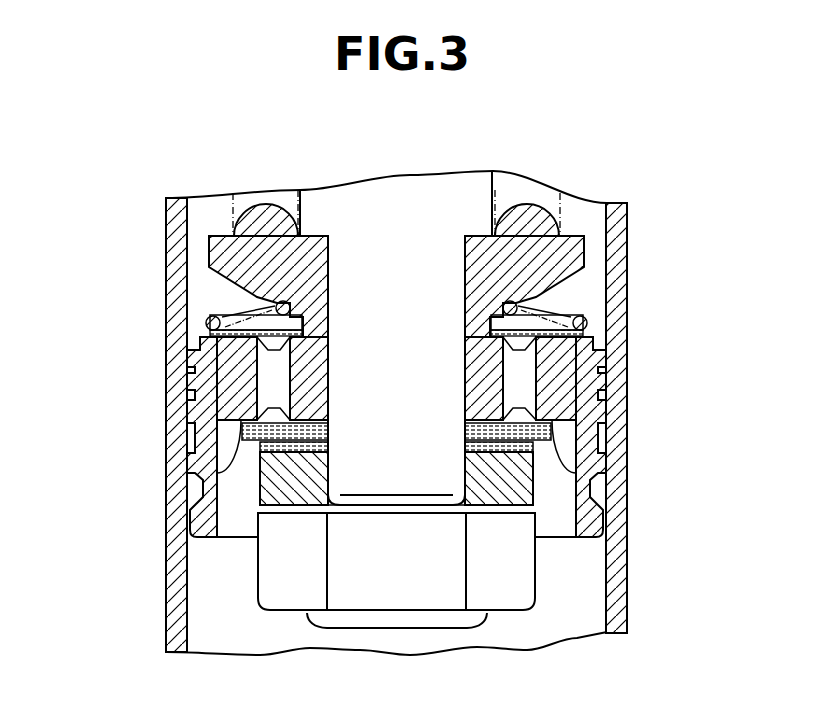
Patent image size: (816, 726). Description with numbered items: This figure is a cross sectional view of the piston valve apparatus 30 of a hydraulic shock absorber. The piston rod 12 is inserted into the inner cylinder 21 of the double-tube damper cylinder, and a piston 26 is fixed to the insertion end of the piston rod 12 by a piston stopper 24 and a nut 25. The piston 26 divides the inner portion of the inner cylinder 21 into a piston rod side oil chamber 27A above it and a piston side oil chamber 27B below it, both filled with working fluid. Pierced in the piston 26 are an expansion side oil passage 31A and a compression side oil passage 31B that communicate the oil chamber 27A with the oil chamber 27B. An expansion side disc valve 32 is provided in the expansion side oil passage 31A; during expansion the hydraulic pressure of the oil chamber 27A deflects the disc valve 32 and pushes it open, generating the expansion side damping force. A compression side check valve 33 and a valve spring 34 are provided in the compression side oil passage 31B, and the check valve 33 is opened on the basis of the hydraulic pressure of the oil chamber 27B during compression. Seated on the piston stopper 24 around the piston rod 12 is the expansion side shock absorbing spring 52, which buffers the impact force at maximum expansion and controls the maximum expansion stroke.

The piston rod 12 is at (416, 212).
The inner cylinder 21 is at (178, 313).
The piston stopper 24 is at (520, 267).
The nut 25 is at (497, 571).
The piston 26 is at (205, 440).
The piston rod side oil chamber 27A is at (195, 222).
The piston side oil chamber 27B is at (212, 593).
The piston valve apparatus 30 is at (218, 293).
The expansion side oil passage 31A is at (275, 378).
The compression side oil passage 31B is at (558, 387).
The expansion side disc valve 32 is at (247, 463).
The compression side check valve 33 is at (585, 333).
The valve spring 34 is at (578, 317).
The expansion side shock absorbing spring 52 is at (560, 219).